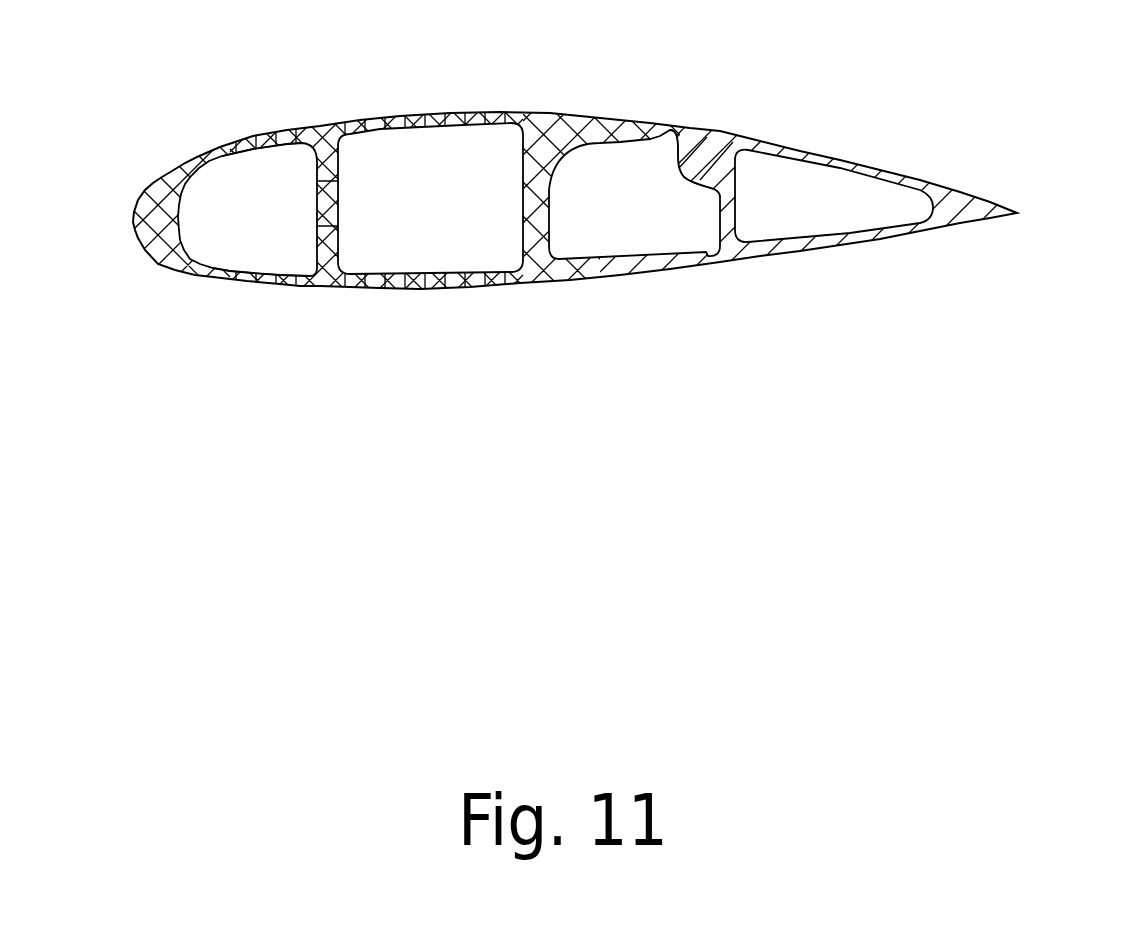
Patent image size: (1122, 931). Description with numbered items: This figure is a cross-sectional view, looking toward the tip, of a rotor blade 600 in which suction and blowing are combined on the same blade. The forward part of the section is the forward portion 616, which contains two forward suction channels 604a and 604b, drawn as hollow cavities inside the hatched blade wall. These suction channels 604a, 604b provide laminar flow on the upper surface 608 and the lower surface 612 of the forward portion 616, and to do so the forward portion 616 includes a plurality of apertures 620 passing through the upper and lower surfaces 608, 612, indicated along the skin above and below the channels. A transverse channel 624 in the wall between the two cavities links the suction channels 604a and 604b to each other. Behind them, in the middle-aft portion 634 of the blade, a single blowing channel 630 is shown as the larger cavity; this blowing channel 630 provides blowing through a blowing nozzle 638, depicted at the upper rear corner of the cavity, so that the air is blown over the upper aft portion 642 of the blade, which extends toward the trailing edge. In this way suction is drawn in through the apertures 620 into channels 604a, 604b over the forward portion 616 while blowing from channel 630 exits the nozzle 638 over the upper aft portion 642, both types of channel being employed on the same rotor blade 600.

The rotor blade 600 is at (918, 352).
The forward suction channel 604a is at (277, 233).
The forward suction channel 604b is at (467, 233).
The upper surface 608 is at (283, 130).
The lower surface 612 is at (272, 284).
The forward portion 616 is at (171, 172).
The apertures 620 is at (240, 133).
The transverse channel 624 is at (327, 207).
The blowing channel 630 is at (668, 223).
The middle-aft portion 634 is at (574, 117).
The blowing nozzle 638 is at (698, 128).
The upper aft portion 642 is at (859, 167).